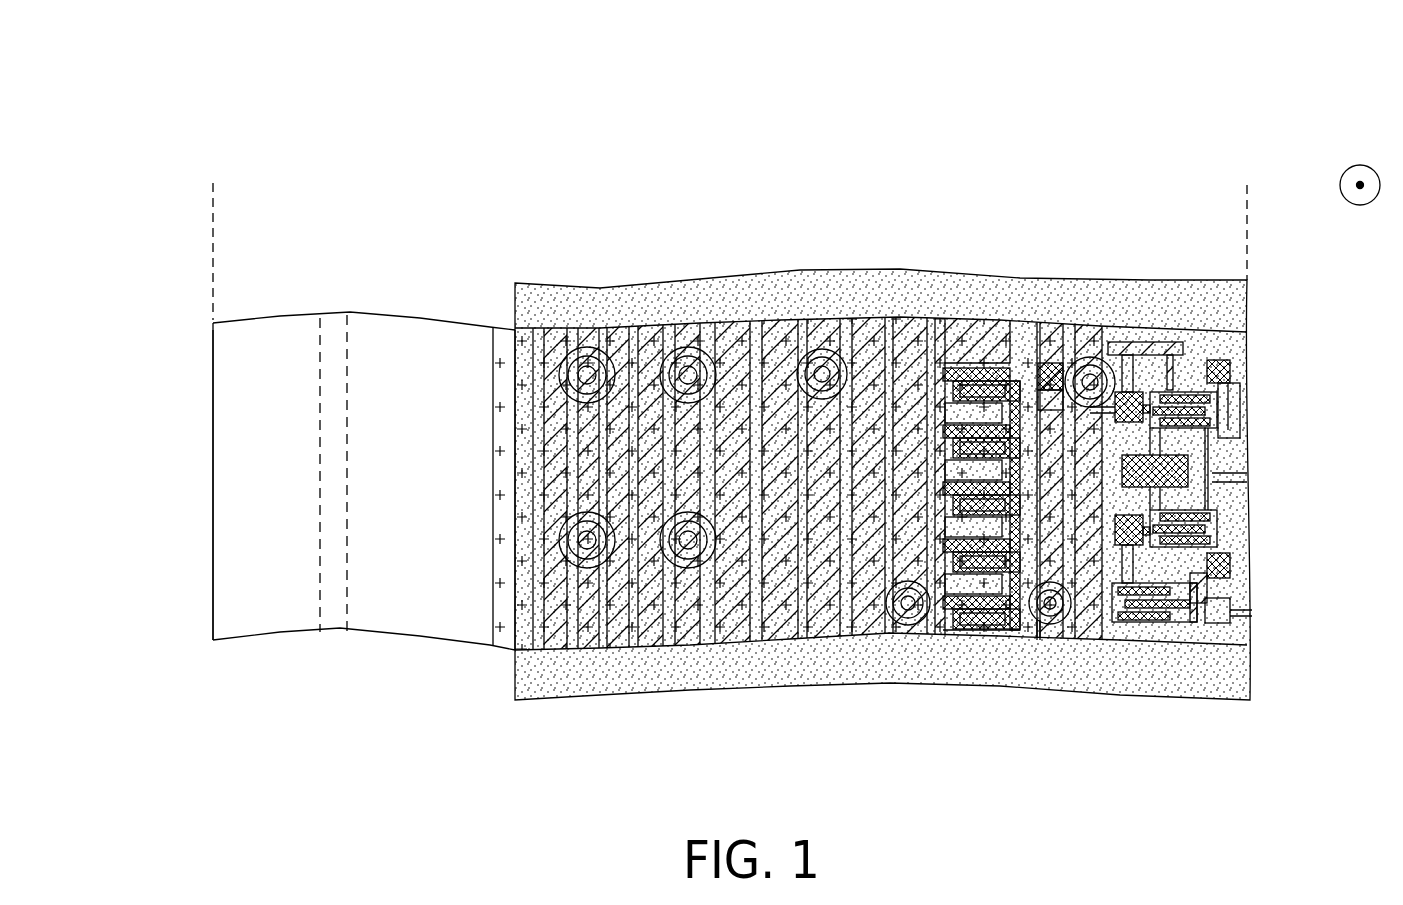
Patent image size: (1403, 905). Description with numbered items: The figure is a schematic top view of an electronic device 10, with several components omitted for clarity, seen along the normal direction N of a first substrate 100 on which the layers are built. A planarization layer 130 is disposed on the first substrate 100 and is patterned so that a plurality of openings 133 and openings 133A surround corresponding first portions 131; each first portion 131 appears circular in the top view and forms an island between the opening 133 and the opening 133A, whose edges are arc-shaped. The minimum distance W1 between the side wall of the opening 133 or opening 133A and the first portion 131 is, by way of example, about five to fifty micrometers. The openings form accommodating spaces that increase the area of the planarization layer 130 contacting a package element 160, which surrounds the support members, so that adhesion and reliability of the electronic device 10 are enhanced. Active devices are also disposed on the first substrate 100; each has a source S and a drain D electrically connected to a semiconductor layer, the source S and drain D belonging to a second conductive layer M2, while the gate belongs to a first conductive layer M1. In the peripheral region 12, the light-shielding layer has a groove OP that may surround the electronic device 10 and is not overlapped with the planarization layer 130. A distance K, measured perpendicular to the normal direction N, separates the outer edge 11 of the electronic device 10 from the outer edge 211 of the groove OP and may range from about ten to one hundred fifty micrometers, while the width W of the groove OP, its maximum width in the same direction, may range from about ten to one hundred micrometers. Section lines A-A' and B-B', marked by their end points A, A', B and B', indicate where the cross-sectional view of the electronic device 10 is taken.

The peripheral region 12 is at (1247, 202).
The outer edge 11 is at (213, 393).
The first substrate 100 is at (245, 575).
The outer edge of the groove 211 is at (318, 384).
The groove OP is at (333, 334).
The distance K is at (320, 460).
The width W is at (290, 538).
The package element 160 is at (493, 378).
The planarization layer 130 is at (628, 287).
The first conductive layer M1 is at (778, 620).
The opening 133 is at (875, 617).
The first portion 131 is at (910, 612).
The opening 133A is at (1043, 623).
The source S is at (943, 612).
The drain D is at (1023, 623).
The distance W1 is at (1039, 626).
The second conductive layer M2 is at (150, 72).
The normal direction N is at (1371, 185).
The electronic device 10 is at (1333, 769).
The section line A-A' A is at (967, 609).
The section line A- A' is at (1094, 609).
The section line B-B' B is at (322, 596).
The section line B- B' is at (405, 596).